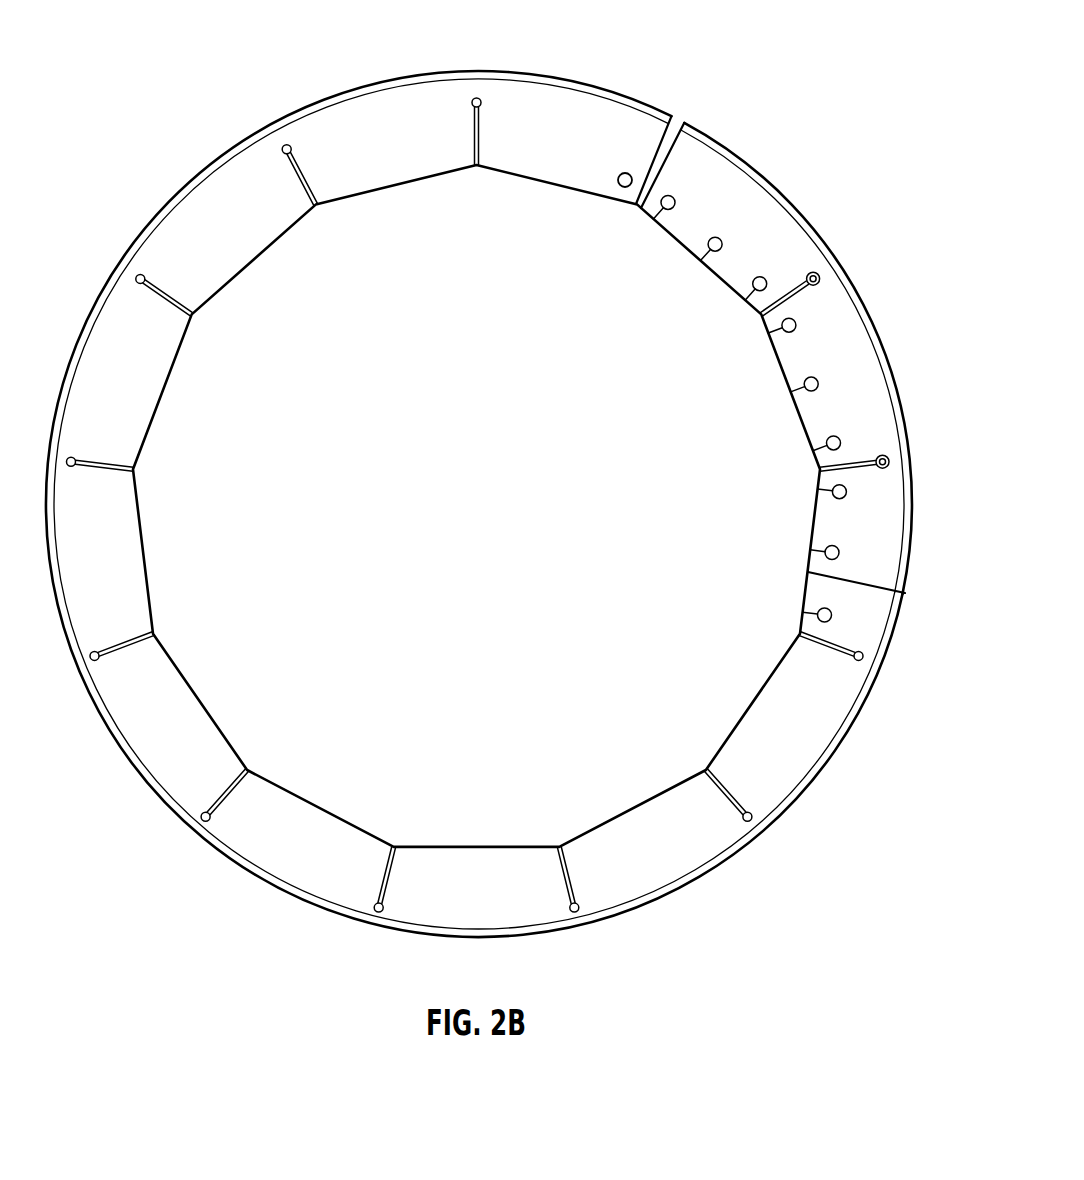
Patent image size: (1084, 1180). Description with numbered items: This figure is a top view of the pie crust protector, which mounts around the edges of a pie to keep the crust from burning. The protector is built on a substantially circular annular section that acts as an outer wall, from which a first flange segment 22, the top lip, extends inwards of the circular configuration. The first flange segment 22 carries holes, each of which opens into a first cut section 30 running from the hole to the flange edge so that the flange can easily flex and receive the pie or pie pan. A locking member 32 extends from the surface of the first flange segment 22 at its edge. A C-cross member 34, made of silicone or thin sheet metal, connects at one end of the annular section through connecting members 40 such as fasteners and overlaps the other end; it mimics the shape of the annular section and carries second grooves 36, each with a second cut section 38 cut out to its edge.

The first flange segment 22 is at (568, 118).
The first cut section 30 is at (128, 650).
The locking member 32 is at (627, 168).
The C-cross member 34 is at (727, 195).
The second grooves 36 is at (842, 552).
The second cut section 38 is at (825, 552).
The connecting members 40 is at (889, 460).